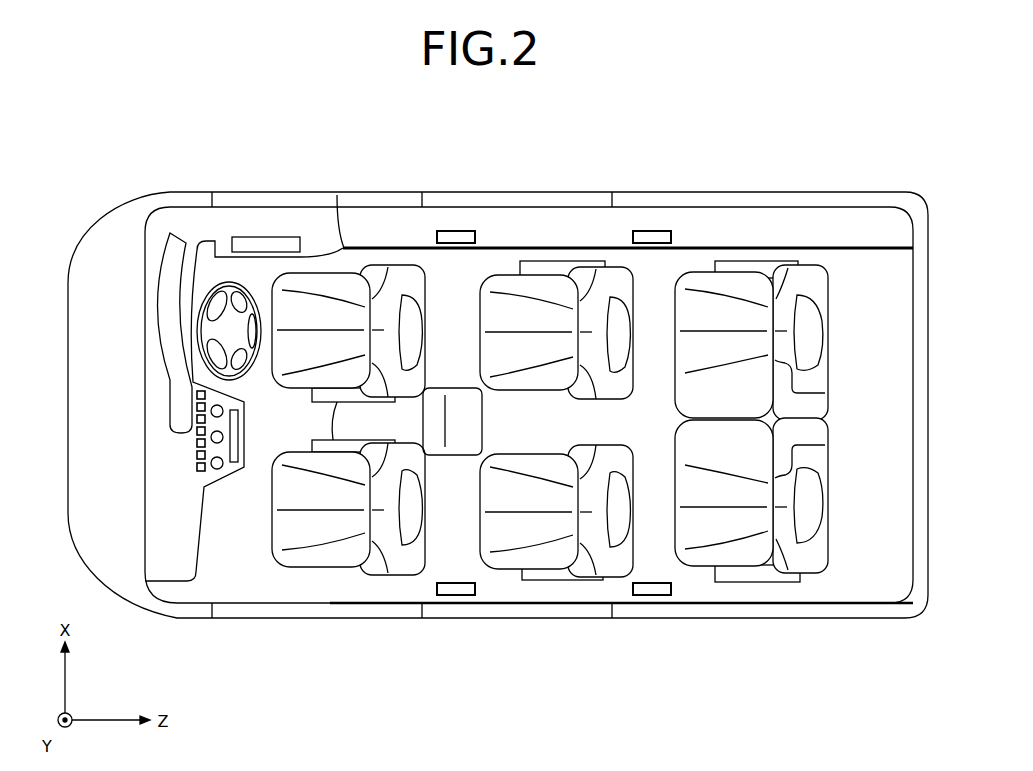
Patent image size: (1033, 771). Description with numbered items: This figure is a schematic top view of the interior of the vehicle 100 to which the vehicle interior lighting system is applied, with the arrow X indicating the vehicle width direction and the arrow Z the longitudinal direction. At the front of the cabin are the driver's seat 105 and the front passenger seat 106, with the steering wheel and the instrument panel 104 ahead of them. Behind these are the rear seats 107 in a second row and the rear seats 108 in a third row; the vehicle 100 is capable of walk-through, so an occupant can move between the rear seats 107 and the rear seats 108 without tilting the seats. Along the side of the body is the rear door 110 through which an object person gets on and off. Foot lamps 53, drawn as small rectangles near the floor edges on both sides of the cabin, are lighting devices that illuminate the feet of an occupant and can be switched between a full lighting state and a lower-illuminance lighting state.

The vehicle 100 is at (625, 172).
The instrument panel 104 is at (181, 320).
The driver's seat 105 is at (317, 318).
The front passenger seat 106 is at (318, 494).
The rear seats in a second row 107 is at (513, 317).
The rear seats in a third row 108 is at (733, 317).
The rear door 110 is at (573, 200).
The foot lamps 53 is at (454, 237).